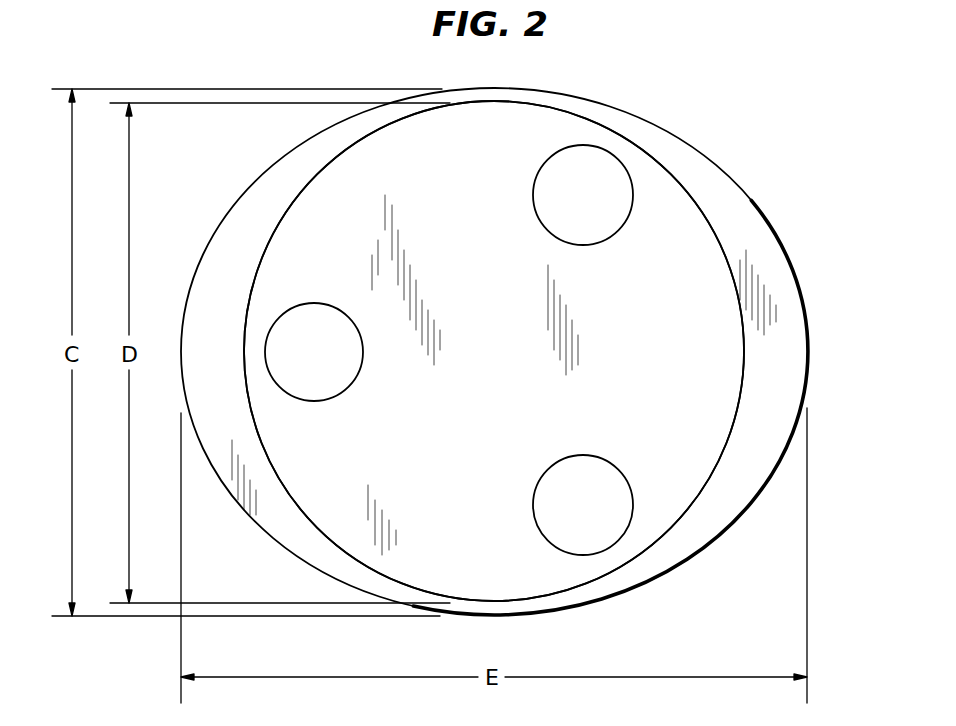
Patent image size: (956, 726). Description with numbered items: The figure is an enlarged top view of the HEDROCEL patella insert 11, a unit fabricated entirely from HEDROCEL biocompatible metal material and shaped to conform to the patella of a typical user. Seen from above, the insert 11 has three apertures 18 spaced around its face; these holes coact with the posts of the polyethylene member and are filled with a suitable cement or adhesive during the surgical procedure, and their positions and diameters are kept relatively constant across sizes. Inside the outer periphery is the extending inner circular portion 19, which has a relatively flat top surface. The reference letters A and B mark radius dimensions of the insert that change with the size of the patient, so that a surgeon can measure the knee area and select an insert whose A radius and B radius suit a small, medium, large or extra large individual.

The HEDROCEL patella insert 11 is at (450, 183).
The apertures 18 is at (608, 172).
The inner circular portion 19 is at (717, 413).
The A radius A is at (572, 94).
The B radius B is at (743, 188).